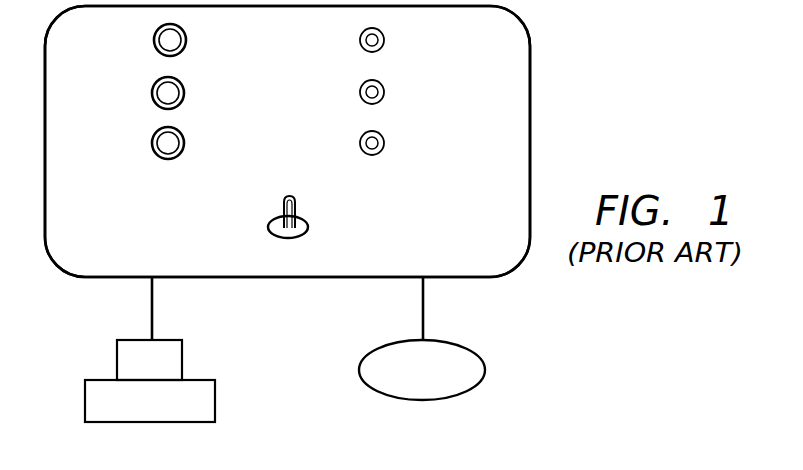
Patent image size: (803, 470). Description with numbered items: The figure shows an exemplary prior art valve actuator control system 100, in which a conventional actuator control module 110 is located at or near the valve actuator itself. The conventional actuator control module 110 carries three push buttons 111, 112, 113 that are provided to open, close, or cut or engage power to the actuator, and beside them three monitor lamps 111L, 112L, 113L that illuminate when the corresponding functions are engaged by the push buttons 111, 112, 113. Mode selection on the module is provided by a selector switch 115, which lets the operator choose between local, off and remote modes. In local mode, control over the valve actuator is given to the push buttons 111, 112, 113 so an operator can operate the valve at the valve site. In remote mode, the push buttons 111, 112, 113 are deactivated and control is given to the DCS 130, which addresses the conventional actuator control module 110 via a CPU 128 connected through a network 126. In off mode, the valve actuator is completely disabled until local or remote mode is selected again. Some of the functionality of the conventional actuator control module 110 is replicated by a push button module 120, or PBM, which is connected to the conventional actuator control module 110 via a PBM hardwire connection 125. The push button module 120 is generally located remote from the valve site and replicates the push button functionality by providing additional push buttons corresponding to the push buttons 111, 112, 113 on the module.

The prior art valve actuator control system 100 is at (563, 55).
The conventional actuator control module 110 is at (531, 138).
The push button 111 is at (153, 42).
The push button 112 is at (152, 94).
The push button 113 is at (152, 145).
The monitor lamp 111L is at (385, 40).
The monitor lamp 112L is at (385, 92).
The monitor lamp 113L is at (385, 143).
The selector switch 115 is at (291, 195).
The push button module 120 is at (486, 370).
The PBM hardwire connection 125 is at (425, 310).
The network 126 is at (150, 310).
The CPU 128 is at (117, 358).
The DCS 130 is at (85, 400).